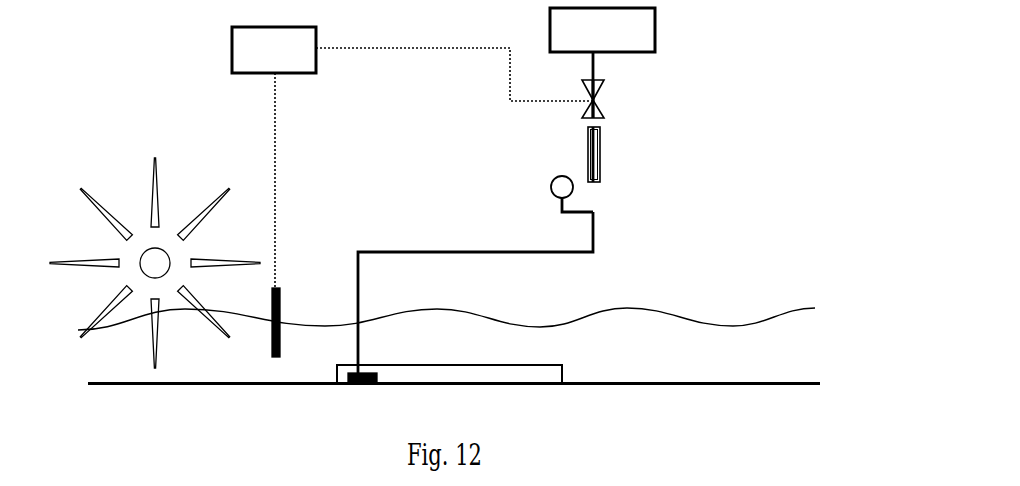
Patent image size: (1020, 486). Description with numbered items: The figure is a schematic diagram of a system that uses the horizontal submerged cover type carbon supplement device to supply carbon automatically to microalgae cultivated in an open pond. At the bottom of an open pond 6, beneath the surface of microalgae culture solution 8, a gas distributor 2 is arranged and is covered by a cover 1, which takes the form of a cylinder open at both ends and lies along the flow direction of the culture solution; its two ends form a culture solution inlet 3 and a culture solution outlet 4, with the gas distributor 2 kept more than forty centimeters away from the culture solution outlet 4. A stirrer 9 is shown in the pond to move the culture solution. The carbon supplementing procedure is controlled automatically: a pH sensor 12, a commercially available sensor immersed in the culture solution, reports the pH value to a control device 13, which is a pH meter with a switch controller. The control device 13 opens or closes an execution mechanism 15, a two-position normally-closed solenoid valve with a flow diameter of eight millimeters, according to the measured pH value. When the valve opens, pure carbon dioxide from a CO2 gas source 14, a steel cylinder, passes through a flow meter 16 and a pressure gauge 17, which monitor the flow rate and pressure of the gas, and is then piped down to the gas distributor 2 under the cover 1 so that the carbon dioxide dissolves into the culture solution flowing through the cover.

The cover 1 is at (440, 364).
The gas distributor 2 is at (366, 373).
The culture solution inlet 3 is at (335, 371).
The culture solution outlet 4 is at (567, 372).
The bottom of an open pond 6 is at (242, 381).
The surface of microalgae culture solution 8 is at (668, 310).
The stirrer 9 is at (213, 203).
The pH sensor 12 is at (284, 288).
The control device 13 is at (412, 157).
The CO2 gas source 14 is at (602, 30).
The execution mechanism 15 is at (605, 93).
The flow meter 16 is at (607, 163).
The pressure gauge 17 is at (559, 176).